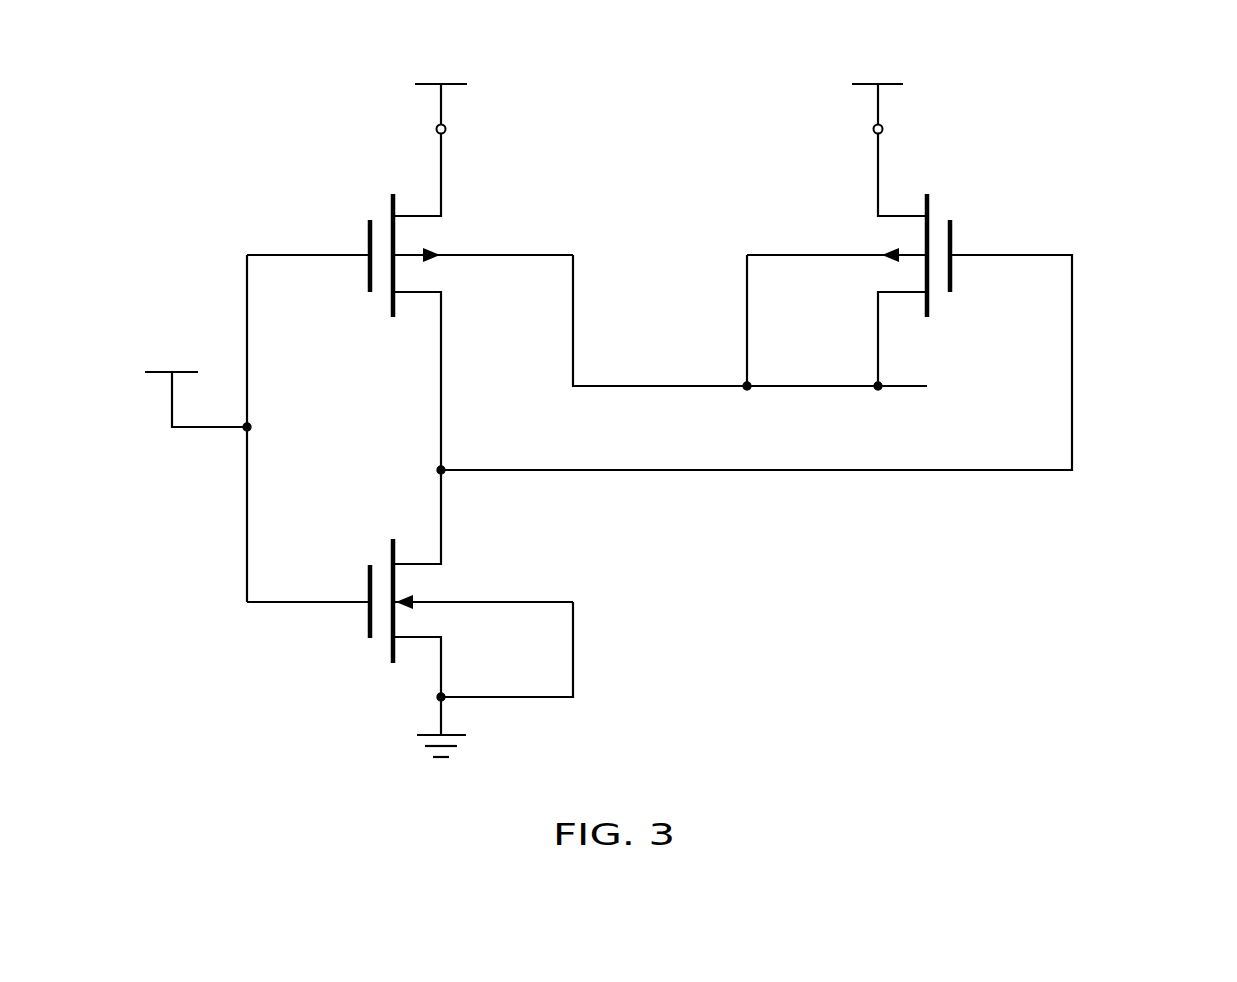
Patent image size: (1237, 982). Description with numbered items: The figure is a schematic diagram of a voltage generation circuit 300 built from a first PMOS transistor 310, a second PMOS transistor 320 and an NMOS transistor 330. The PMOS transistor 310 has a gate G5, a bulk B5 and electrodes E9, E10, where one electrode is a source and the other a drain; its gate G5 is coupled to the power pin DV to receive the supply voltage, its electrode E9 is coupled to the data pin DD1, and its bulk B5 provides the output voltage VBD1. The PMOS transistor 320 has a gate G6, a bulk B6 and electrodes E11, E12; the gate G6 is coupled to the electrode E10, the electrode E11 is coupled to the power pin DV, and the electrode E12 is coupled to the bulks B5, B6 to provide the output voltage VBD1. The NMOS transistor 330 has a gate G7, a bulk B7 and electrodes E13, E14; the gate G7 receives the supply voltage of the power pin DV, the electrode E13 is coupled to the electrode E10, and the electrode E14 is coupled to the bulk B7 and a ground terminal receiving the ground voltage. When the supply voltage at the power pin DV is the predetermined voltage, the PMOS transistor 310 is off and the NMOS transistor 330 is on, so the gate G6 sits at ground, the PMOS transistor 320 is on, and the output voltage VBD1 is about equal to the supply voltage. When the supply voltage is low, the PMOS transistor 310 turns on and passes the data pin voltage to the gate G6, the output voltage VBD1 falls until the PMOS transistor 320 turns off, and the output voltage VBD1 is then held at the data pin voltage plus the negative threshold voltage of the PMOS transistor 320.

The voltage generation circuit 300 is at (1222, 84).
The PMOS transistor 310 is at (381, 215).
The PMOS transistor 320 is at (939, 215).
The NMOS transistor 330 is at (381, 562).
The electrode E9 is at (445, 186).
The electrode E10 is at (445, 320).
The electrode E11 is at (875, 188).
The electrode E12 is at (875, 322).
The electrode E13 is at (445, 533).
The electrode E14 is at (445, 665).
The bulk B5 is at (455, 252).
The bulk B6 is at (863, 252).
The bulk B7 is at (455, 597).
The gate G5 is at (343, 259).
The gate G6 is at (977, 259).
The gate G7 is at (343, 606).
The data pin DD1 is at (436, 129).
The power pin DV is at (884, 129).
The output voltage VBD1 is at (947, 386).